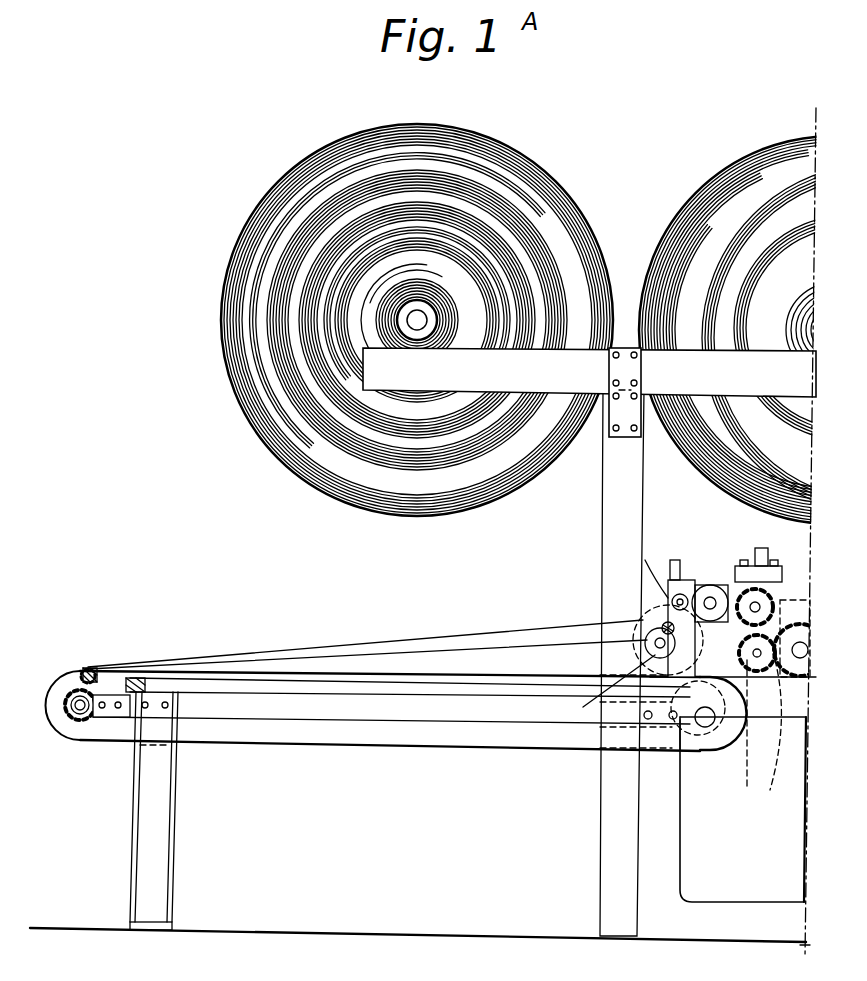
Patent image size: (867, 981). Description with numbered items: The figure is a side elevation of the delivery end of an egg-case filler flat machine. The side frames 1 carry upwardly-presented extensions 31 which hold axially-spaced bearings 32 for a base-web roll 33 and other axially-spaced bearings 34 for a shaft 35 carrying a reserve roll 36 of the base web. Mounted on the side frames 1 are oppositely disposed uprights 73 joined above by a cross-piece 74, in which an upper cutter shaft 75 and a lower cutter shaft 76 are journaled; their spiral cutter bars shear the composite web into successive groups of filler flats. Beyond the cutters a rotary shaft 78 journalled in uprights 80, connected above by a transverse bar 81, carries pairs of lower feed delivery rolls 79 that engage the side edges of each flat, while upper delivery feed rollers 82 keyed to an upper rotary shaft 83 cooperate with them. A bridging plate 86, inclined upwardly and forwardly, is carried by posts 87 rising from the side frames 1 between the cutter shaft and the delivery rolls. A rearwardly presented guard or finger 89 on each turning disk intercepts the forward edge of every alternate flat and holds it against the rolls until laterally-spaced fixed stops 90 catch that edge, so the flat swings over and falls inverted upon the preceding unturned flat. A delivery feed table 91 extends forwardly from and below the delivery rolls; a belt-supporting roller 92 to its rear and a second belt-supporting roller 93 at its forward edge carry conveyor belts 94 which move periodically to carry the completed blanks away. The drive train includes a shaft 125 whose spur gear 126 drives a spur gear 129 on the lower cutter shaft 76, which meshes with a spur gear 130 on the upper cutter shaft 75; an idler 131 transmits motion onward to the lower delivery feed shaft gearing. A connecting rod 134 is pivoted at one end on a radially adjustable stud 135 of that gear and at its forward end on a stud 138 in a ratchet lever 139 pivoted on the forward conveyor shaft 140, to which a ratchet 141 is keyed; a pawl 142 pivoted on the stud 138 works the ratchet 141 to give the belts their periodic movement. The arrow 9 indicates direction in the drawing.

The side frames 1 is at (668, 840).
The direction of feed 9 is at (655, 549).
The upwardly-presented extensions 31 is at (622, 663).
The axially-spaced bearings 32 is at (812, 335).
The base-web roll 33 is at (744, 178).
The axially-spaced bearings 34 is at (410, 338).
The shaft 35 is at (428, 315).
The reserve roll 36 is at (276, 212).
The uprights 73 is at (760, 588).
The cross-piece 74 is at (750, 566).
The upper cutter shaft 75 is at (738, 602).
The lower cutter shaft 76 is at (761, 733).
The rotary shaft 78 is at (642, 641).
The lower feed delivery rolls 79 is at (635, 656).
The uprights 80 is at (708, 585).
The transverse bar 81 is at (673, 565).
The upper delivery feed rollers 82 is at (655, 626).
The upper rotary shaft 83 is at (640, 571).
The bridging plate 86 is at (705, 708).
The posts 87 is at (660, 722).
The guard or finger 89 is at (645, 622).
The fixed stops 90 is at (605, 689).
The delivery feed table 91 is at (365, 682).
The belt-supporting roller 92 is at (712, 742).
The second belt-supporting roller 93 is at (92, 722).
The conveyor belts 94 is at (296, 750).
The shaft 125 is at (795, 800).
The spur gear 126 is at (801, 622).
The spur gear 129 is at (775, 725).
The spur gear 130 is at (804, 610).
The idler 131 is at (745, 800).
The connecting rod 134 is at (373, 648).
The stud 135 is at (640, 625).
The stud 138 is at (90, 666).
The ratchet lever 139 is at (137, 678).
The forward conveyor shaft 140 is at (80, 712).
The ratchet 141 is at (128, 712).
The pawl 142 is at (84, 675).